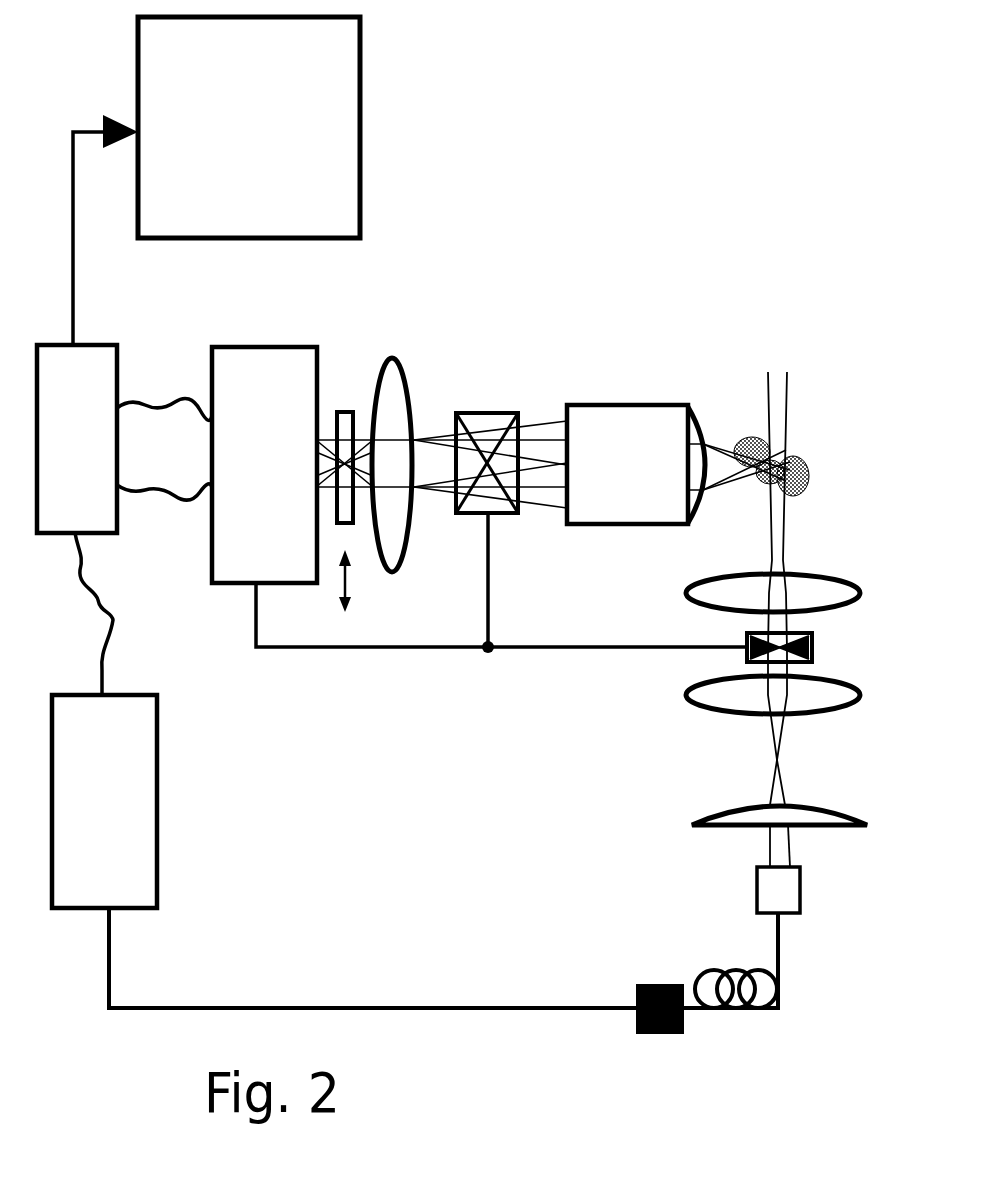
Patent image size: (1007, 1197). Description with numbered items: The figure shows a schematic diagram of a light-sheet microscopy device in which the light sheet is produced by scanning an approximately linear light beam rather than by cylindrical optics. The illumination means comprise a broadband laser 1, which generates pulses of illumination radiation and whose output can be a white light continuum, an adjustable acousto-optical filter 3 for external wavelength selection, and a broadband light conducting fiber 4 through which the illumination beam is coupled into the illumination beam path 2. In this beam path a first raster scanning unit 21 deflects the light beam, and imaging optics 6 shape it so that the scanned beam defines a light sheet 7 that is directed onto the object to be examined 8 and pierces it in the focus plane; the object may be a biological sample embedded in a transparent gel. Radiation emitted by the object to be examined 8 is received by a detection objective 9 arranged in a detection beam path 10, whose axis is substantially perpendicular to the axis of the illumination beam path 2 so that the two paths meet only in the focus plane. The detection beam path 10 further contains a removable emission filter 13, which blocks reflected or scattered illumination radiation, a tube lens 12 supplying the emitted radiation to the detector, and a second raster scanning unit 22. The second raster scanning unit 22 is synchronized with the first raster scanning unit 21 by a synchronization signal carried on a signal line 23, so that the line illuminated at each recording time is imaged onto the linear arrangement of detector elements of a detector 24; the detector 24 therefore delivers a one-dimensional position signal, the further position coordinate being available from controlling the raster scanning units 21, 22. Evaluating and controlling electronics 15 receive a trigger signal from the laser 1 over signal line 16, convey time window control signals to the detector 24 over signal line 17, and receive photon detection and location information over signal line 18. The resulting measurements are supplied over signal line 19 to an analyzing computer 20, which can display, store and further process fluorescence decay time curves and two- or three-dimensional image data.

The broadband laser 1 is at (109, 719).
The illumination beam path 2 is at (790, 843).
The adjustable acousto-optical filter 3 is at (665, 1033).
The broadband light conducting fiber 4 is at (783, 960).
The imaging optics 6 is at (690, 800).
The light sheet 7 is at (780, 555).
The object to be examined 8 is at (810, 475).
The detection objective 9 is at (678, 464).
The detection beam path 10 is at (545, 450).
The tube lens 12 is at (397, 568).
The emission filter 13 is at (343, 410).
The evaluating and controlling electronics 15 is at (77, 439).
The signal line 16 is at (117, 618).
The signal line 17 is at (152, 497).
The signal line 18 is at (150, 403).
The signal line 19 is at (76, 237).
The analyzing computer 20 is at (365, 86).
The first raster scanning unit 21 is at (812, 647).
The second raster scanning unit 22 is at (487, 411).
The signal line 23 is at (556, 650).
The detector 24 is at (264, 465).